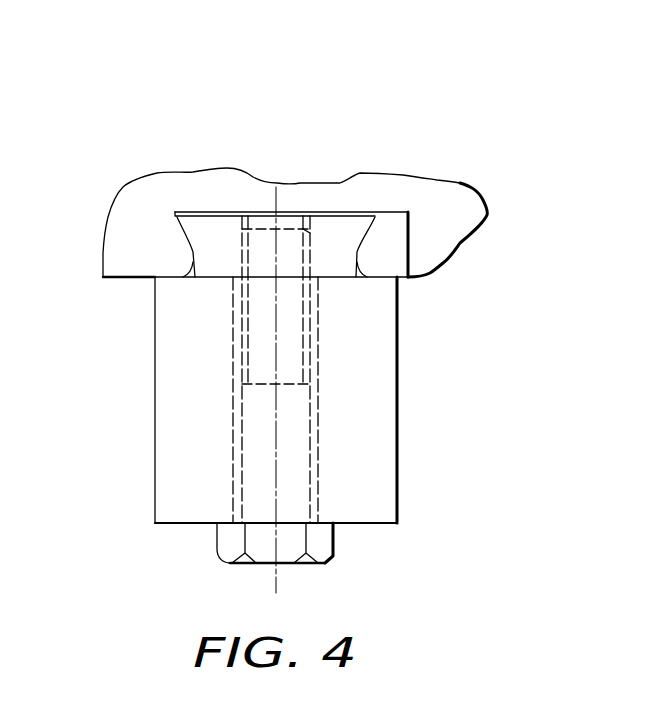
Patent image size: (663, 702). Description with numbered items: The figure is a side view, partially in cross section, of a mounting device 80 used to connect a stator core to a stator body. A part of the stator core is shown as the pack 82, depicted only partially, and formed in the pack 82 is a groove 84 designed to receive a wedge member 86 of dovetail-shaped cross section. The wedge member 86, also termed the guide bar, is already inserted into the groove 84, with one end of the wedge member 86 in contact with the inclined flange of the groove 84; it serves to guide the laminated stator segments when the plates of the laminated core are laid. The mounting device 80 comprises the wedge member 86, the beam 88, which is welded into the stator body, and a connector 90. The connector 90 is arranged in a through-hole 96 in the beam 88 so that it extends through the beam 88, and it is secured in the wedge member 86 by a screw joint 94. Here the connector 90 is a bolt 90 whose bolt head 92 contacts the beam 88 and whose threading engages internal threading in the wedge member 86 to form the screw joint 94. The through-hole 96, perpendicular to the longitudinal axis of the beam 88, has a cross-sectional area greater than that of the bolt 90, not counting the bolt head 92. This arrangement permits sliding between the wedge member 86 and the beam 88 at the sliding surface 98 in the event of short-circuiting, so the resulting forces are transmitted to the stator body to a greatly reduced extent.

The mounting device 80 is at (284, 126).
The pack 82 is at (134, 222).
The groove 84 is at (408, 243).
The wedge member 86 is at (216, 232).
The beam 88 is at (372, 473).
The connector 90 is at (293, 410).
The bolt head 92 is at (333, 560).
The screw joint 94 is at (315, 247).
The through-hole 96 is at (233, 463).
The sliding surface 98 is at (334, 278).